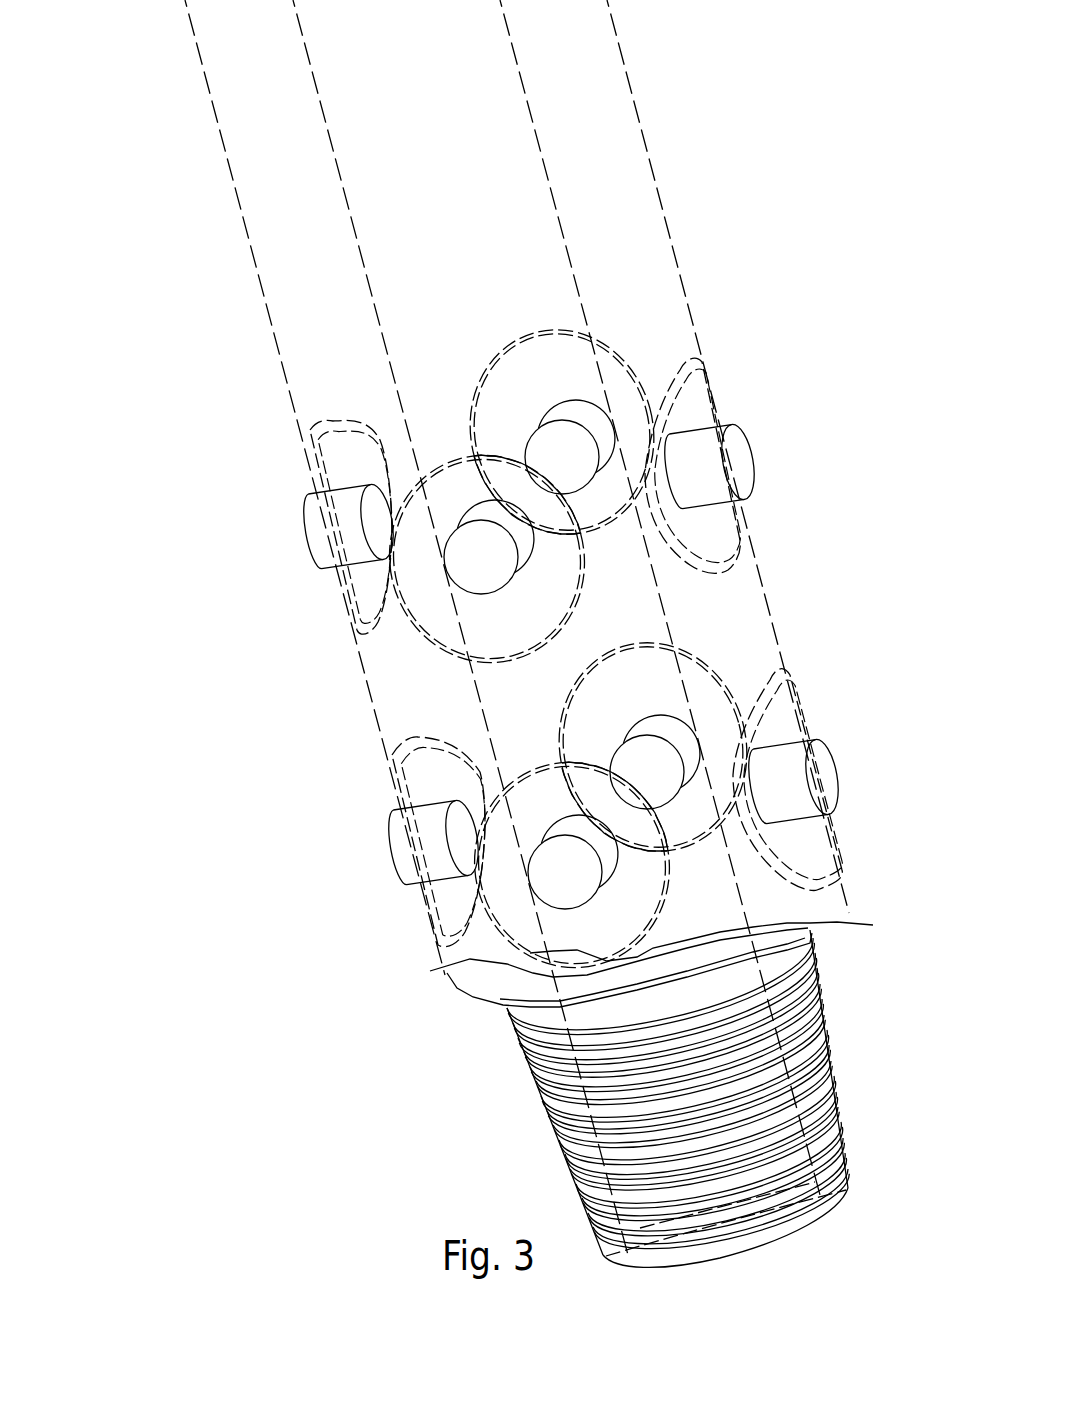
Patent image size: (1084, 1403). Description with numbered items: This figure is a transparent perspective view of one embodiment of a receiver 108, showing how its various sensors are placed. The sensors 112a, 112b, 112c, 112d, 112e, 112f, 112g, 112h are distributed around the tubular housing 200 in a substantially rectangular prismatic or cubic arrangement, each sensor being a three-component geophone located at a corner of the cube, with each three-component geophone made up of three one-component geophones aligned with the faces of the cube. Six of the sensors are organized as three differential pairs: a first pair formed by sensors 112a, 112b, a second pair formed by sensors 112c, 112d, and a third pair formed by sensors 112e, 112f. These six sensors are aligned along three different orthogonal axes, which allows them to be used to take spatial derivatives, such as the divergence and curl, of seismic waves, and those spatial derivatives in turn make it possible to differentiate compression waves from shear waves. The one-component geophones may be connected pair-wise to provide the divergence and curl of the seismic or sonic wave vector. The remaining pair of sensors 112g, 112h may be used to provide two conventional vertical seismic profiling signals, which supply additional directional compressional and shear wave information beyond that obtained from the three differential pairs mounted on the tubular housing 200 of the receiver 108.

The receiver 108 is at (253, 698).
The tubular housing 200 is at (610, 199).
The sensor 112a is at (648, 753).
The sensor 112b is at (400, 855).
The sensor 112c is at (548, 437).
The sensor 112d is at (738, 455).
The sensor 112e is at (490, 553).
The sensor 112f is at (570, 878).
The sensor 112g is at (318, 534).
The sensor 112h is at (826, 773).